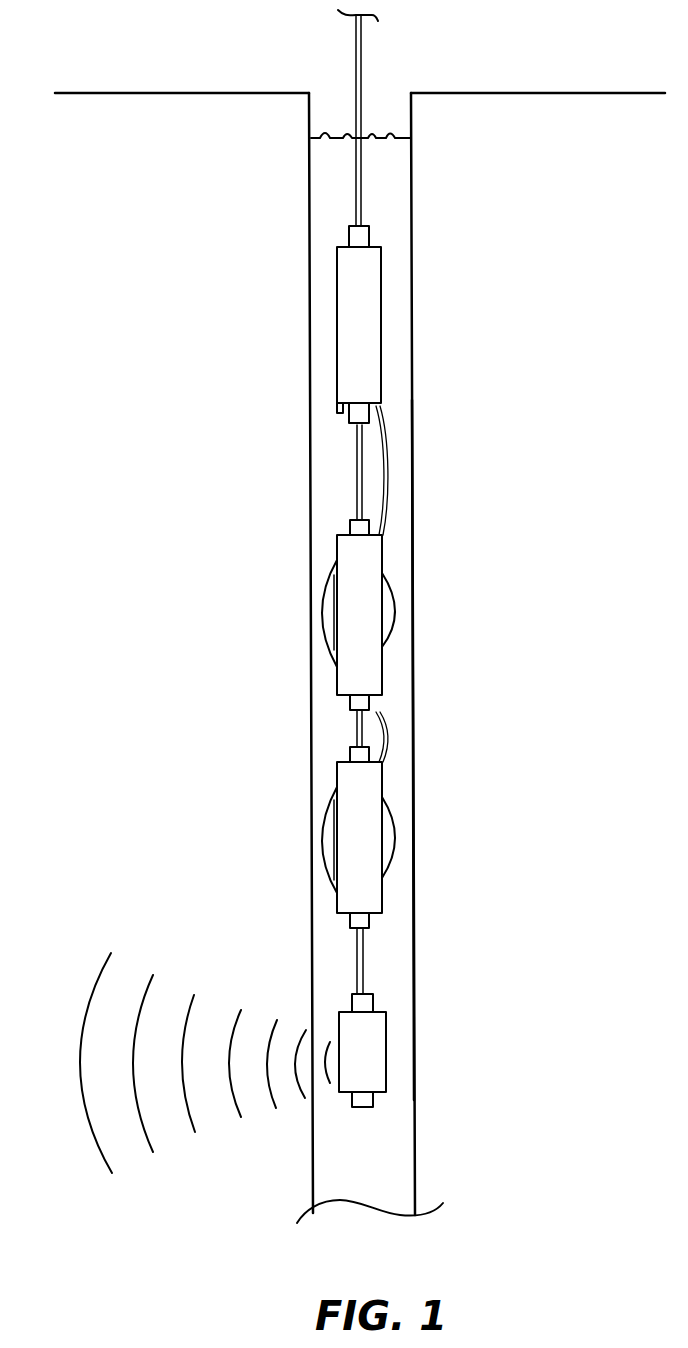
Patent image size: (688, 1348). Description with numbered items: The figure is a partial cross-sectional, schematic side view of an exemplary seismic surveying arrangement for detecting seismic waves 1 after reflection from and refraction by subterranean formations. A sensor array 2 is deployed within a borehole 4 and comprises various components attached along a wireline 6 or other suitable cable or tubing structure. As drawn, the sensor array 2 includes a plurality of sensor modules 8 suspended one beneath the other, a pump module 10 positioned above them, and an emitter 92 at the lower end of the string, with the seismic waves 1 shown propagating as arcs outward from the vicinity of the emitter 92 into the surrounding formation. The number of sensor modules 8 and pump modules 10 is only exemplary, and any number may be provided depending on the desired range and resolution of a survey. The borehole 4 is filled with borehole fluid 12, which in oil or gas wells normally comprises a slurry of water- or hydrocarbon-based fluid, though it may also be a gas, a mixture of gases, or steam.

The seismic waves 1 is at (101, 962).
The sensor array 2 is at (263, 440).
The borehole 4 is at (414, 958).
The wireline 6 is at (361, 70).
The sensor module 8 is at (320, 621).
The pump module 10 is at (382, 336).
The borehole fluid 12 is at (340, 132).
The emitter 92 is at (386, 1045).